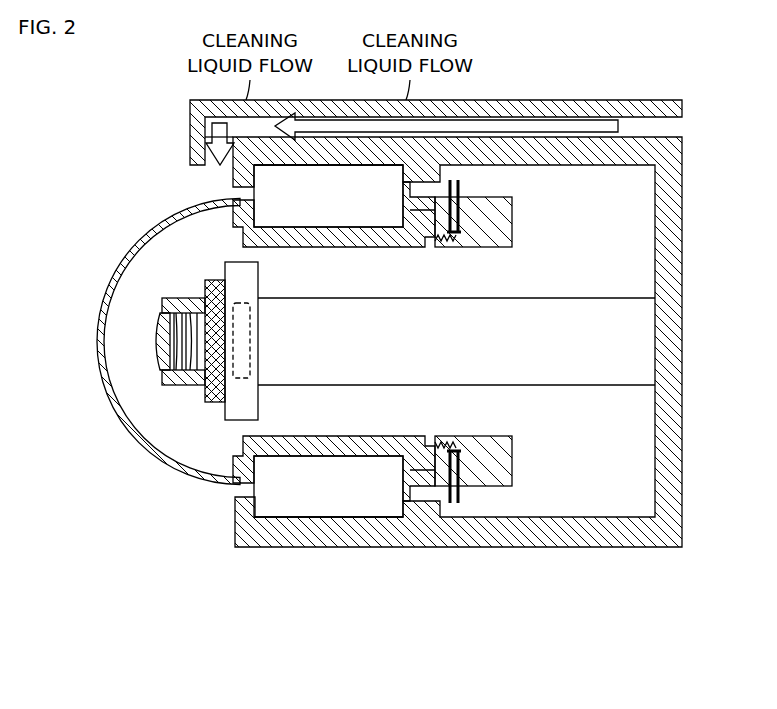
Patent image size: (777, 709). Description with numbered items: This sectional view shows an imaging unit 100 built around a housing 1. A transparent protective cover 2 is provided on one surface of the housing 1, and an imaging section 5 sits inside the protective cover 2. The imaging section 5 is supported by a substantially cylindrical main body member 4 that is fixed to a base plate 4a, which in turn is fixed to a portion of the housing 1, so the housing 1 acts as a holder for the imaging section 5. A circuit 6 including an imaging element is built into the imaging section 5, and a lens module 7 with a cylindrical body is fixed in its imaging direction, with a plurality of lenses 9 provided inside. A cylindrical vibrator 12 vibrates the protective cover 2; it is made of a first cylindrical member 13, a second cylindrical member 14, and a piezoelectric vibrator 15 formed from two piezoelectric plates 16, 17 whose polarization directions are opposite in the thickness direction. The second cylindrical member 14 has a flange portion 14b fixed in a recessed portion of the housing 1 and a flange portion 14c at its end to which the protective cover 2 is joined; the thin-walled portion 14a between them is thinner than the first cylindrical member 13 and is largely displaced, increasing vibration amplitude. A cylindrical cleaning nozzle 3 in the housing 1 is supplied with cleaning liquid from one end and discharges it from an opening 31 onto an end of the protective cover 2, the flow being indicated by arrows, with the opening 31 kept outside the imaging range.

The imaging unit 100 is at (662, 57).
The housing 1 is at (333, 545).
The protective cover 2 is at (142, 450).
The cleaning nozzle 3 is at (510, 104).
The opening 31 is at (214, 164).
The main body member 4 is at (572, 388).
The base plate 4a is at (676, 345).
The imaging section 5 is at (236, 421).
The circuit 6 is at (240, 302).
The lens module 7 is at (178, 388).
The lens 9 is at (151, 345).
The vibrator 12 is at (357, 492).
The first cylindrical member 13 is at (500, 488).
The second cylindrical member 14 is at (403, 637).
The thin-walled portion 14a is at (308, 458).
The flange portion 14b is at (402, 495).
The flange portion 14c is at (265, 478).
The piezoelectric vibrator 15 is at (425, 637).
The piezoelectric plate 16 is at (454, 506).
The piezoelectric plate 17 is at (459, 452).